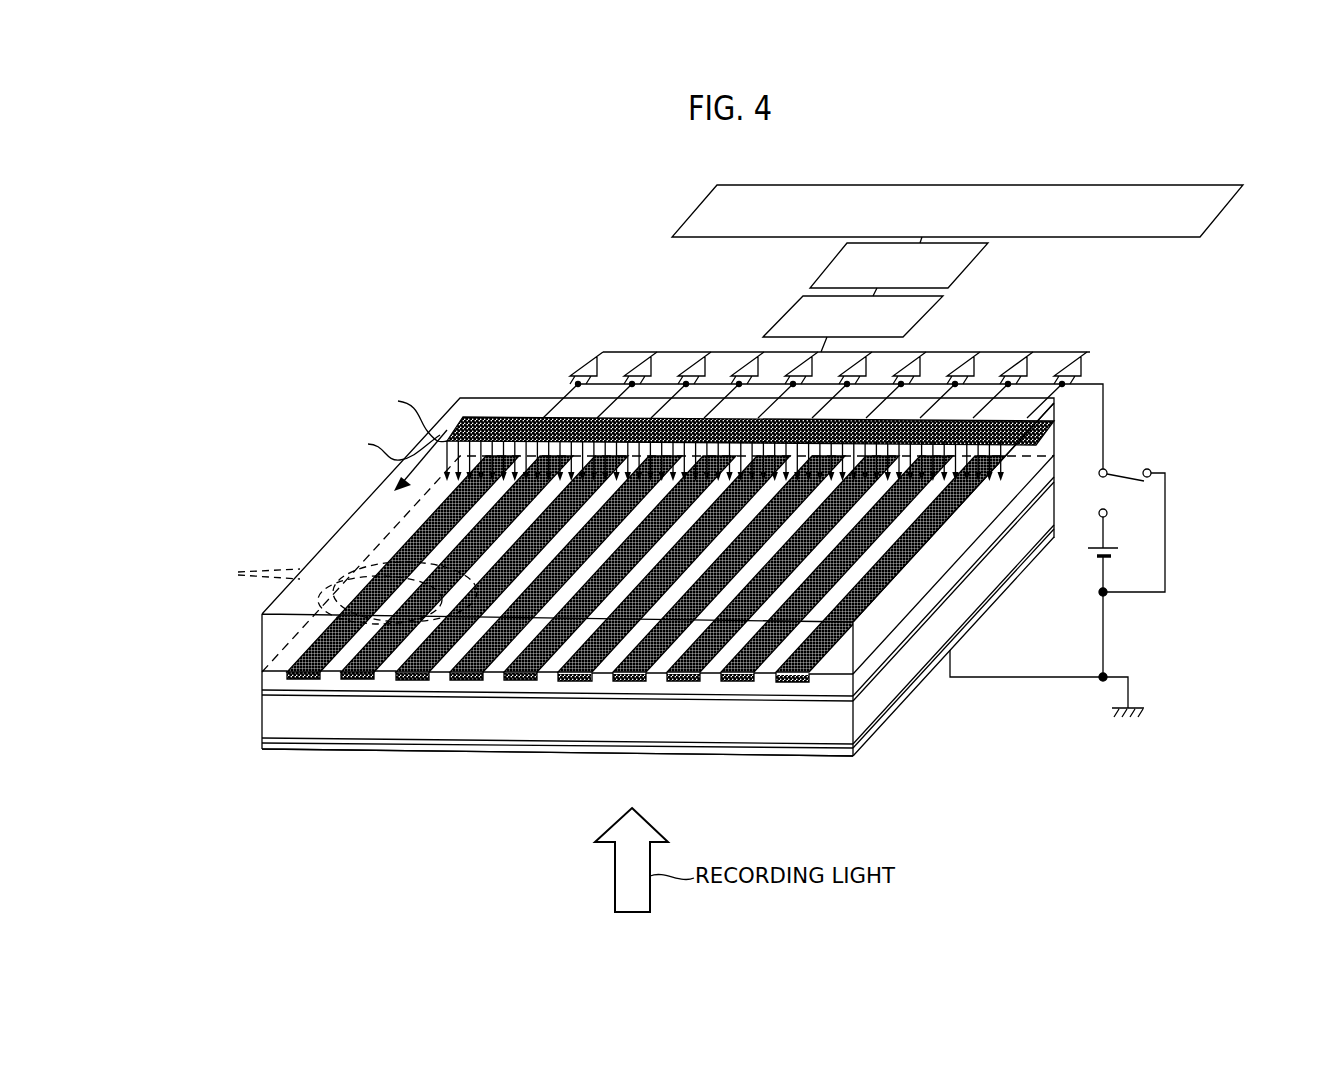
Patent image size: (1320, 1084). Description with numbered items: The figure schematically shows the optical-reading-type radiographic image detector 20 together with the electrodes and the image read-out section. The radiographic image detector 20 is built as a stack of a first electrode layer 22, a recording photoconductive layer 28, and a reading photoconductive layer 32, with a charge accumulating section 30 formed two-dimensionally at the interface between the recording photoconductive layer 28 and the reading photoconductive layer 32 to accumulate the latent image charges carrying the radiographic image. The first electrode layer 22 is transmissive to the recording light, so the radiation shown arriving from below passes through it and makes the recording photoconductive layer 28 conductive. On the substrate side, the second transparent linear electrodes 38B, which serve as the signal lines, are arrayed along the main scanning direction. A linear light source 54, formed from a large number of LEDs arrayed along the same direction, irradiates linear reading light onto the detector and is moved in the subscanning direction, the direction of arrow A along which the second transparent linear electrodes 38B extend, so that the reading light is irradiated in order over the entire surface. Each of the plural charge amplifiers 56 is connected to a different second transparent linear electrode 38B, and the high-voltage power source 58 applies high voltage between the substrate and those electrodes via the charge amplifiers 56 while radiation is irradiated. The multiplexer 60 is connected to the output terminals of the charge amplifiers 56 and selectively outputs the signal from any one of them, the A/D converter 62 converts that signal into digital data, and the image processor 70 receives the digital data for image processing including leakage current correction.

The radiographic image detector 20 is at (288, 507).
The first electrode layer 22 is at (313, 751).
The recording photoconductive layer 28 is at (268, 718).
The charge accumulating section 30 is at (268, 690).
The reading photoconductive layer 32 is at (265, 682).
The second transparent linear electrodes 38B is at (598, 564).
The linear light source 54 is at (500, 417).
The charge amplifiers 56 is at (690, 364).
The high-voltage power source 58 is at (1113, 548).
The multiplexer 60 is at (786, 312).
The A/D converter 62 is at (830, 263).
The image processor 70 is at (700, 206).